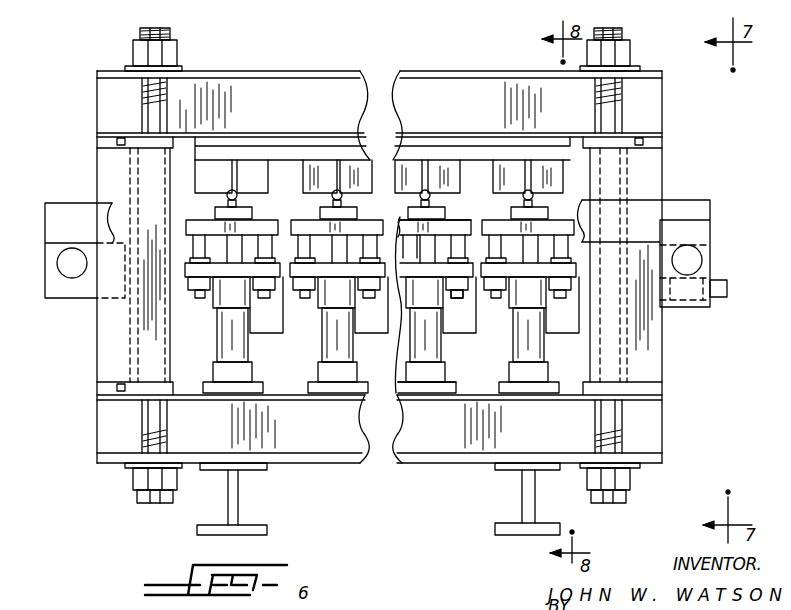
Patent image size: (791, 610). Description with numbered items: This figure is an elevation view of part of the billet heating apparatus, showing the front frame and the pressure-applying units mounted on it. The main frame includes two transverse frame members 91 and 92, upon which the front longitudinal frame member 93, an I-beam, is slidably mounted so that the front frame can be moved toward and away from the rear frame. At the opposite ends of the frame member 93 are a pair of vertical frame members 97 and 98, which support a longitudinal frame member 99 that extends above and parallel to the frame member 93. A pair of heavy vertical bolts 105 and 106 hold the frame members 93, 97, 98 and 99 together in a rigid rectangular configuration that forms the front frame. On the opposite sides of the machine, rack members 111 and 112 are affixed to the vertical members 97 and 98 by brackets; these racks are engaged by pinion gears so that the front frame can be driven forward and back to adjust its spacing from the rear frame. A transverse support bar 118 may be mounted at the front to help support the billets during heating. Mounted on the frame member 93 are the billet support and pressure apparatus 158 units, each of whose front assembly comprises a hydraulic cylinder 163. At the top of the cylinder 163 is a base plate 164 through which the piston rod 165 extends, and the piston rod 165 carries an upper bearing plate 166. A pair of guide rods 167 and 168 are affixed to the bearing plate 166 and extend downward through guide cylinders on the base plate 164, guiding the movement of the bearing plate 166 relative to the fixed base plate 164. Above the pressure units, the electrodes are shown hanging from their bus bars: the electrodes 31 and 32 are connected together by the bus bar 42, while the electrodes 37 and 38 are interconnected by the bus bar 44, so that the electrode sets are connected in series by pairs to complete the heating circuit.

The heavy vertical bolt 105 is at (153, 25).
The vertical frame member 97 is at (113, 168).
The rack member 111 is at (48, 298).
The bus bar 42 is at (250, 152).
The electrode 31 is at (217, 178).
The electrode 32 is at (325, 173).
The longitudinal frame member 99 is at (513, 90).
The heavy vertical bolt 106 is at (613, 22).
The vertical frame member 98 is at (650, 168).
The longitudinal frame member 93 is at (427, 445).
The transverse support bar 118 is at (698, 212).
The rack member 112 is at (692, 263).
The bus bar 44 is at (422, 155).
The electrode 37 is at (442, 173).
The electrode 38 is at (515, 173).
The upper bearing plate 166 is at (441, 208).
The guide rod 167 is at (497, 291).
The billet support and pressure apparatus 158 is at (500, 340).
The piston rod 165 is at (533, 243).
The base plate 164 is at (570, 265).
The guide rod 168 is at (567, 290).
The hydraulic cylinder 163 is at (537, 340).
The transverse frame member 91 is at (238, 490).
The transverse frame member 92 is at (527, 488).